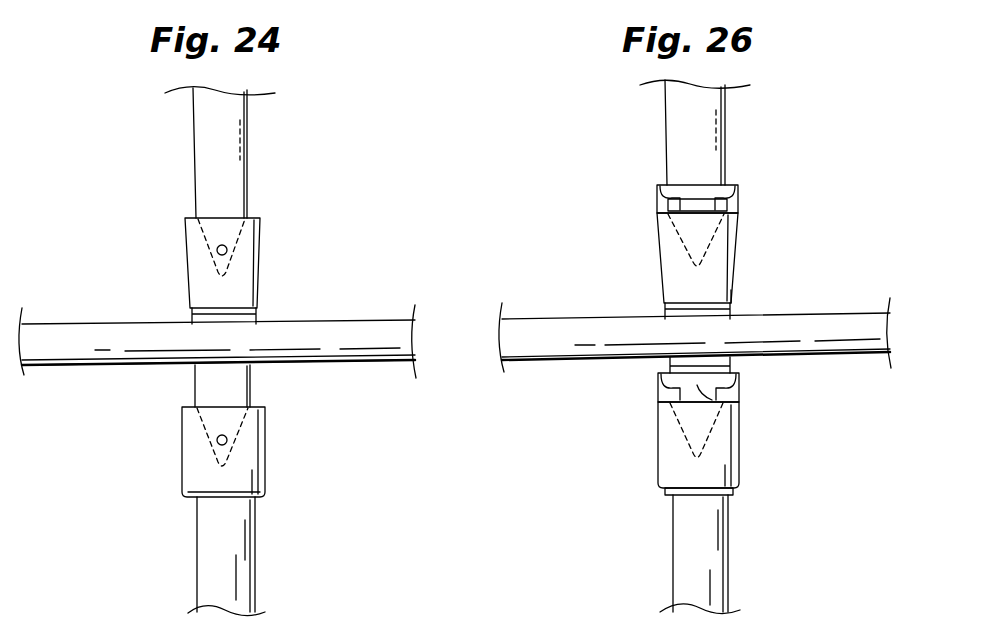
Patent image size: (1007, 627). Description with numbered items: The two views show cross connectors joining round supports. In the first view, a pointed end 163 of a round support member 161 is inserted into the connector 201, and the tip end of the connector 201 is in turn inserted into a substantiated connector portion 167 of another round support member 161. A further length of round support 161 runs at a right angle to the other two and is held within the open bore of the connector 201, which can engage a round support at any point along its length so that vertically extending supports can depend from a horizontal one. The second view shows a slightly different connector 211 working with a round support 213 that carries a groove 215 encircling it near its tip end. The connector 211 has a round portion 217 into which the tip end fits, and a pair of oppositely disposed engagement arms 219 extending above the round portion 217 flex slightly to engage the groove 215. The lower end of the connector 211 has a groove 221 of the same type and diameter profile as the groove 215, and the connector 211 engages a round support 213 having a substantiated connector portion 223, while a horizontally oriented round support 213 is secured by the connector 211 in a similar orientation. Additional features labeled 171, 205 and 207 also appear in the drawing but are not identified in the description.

In FIG. 24, the round support member 161 is at (247, 116).
In FIG. 24, the pointed end 163 is at (213, 232).
In FIG. 24, the substantiated connector portion 167 is at (265, 476).
In FIG. 24, the pin hole 171 is at (228, 250).
In FIG. 24, the connector 201 is at (262, 278).
In FIG. 24, the collar 205 is at (257, 313).
In FIG. 26, the collar 205 is at (724, 313).
In FIG. 24, the lower collar 207 is at (250, 372).
In FIG. 26, the lower collar 207 is at (672, 364).
In FIG. 26, the connector 211 is at (740, 280).
In FIG. 26, the round support 213 is at (720, 118).
In FIG. 26, the groove 215 is at (705, 192).
In FIG. 26, the round portion 217 is at (735, 238).
In FIG. 26, the engagement arms 219 is at (660, 192).
In FIG. 26, the groove 221 is at (697, 385).
In FIG. 26, the substantiated connector portion 223 is at (733, 450).